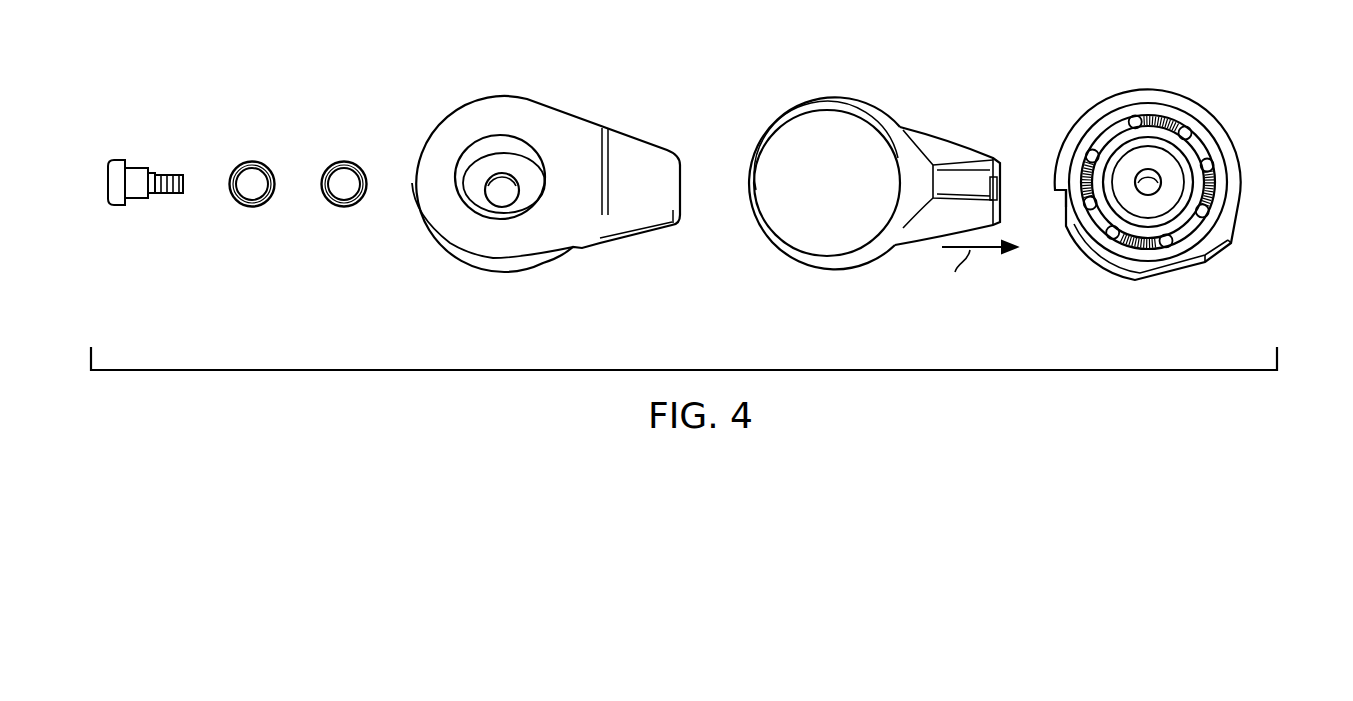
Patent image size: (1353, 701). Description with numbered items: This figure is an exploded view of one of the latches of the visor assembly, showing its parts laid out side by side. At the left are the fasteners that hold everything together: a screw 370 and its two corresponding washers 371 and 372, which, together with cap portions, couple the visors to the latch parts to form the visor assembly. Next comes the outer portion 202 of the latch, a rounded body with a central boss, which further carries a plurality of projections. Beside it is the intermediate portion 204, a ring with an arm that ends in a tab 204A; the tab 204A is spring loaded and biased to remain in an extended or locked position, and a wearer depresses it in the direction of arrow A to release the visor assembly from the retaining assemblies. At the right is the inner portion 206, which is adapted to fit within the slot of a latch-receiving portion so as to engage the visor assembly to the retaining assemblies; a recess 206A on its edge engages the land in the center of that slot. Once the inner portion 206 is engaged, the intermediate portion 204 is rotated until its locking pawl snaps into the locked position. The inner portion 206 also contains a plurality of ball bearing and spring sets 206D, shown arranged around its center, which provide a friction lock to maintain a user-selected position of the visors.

The screw 370 is at (141, 162).
The washer 371 is at (245, 156).
The washer 372 is at (339, 156).
The outer portion 202 is at (548, 95).
The intermediate portion 204 is at (867, 95).
The tab 204A is at (960, 199).
The inner portion 206 is at (1135, 95).
The recess 206A is at (1055, 207).
The ball bearing and spring sets 206D is at (1203, 188).